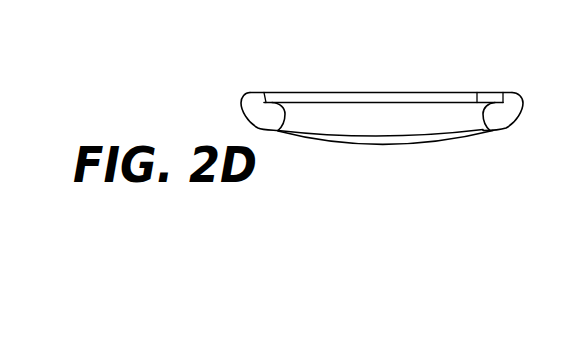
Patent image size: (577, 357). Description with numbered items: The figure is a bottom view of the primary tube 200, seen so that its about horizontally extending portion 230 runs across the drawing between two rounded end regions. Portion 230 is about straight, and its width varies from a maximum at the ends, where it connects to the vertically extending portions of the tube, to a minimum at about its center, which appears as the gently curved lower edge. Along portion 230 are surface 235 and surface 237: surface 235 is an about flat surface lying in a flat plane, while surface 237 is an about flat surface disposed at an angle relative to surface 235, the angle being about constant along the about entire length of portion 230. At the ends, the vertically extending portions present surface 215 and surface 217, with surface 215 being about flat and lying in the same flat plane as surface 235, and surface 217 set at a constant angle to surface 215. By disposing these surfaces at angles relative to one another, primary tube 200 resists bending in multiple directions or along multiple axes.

The primary tube 200 is at (404, 121).
The surface 215 is at (482, 93).
The surface 217 is at (277, 98).
The horizontally extending portion 230 is at (381, 144).
The surface 235 is at (354, 102).
The surface 237 is at (409, 98).